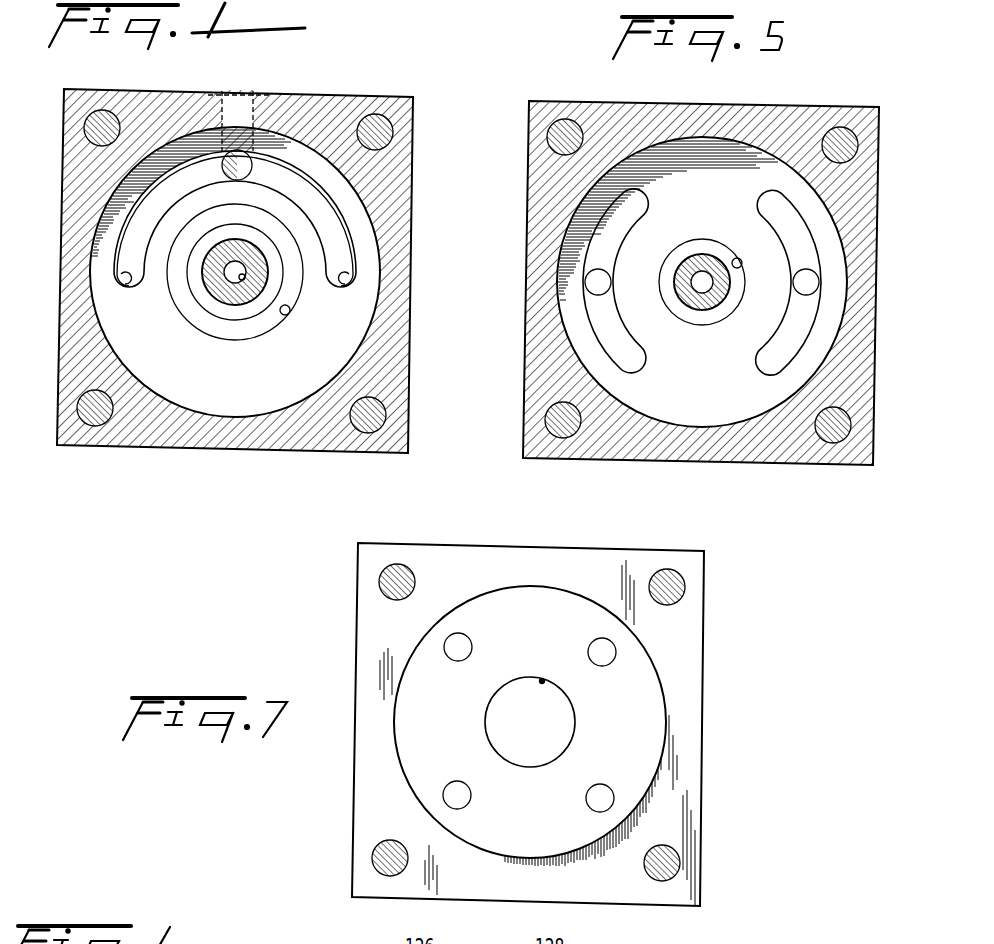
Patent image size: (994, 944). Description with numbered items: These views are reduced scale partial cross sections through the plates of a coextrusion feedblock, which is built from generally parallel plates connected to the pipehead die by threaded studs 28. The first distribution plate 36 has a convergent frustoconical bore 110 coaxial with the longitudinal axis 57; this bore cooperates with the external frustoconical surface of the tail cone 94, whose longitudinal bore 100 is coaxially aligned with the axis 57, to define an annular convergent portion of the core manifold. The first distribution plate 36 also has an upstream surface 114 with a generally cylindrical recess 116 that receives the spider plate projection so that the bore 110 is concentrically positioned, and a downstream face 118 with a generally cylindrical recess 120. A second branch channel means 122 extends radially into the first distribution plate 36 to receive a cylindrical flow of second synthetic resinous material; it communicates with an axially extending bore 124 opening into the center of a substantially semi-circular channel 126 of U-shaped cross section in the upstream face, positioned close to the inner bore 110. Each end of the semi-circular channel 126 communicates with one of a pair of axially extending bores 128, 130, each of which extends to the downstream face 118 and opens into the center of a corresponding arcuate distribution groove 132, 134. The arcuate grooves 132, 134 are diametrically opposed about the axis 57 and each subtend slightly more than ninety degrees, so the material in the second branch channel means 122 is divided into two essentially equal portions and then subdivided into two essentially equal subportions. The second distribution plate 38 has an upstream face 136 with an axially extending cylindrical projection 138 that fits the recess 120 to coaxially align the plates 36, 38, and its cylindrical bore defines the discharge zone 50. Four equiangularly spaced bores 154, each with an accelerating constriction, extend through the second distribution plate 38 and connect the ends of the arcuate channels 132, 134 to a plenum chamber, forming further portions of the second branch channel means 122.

In FIG. 4, the threaded studs 28 is at (84, 129).
In FIG. 5, the threaded studs 28 is at (548, 130).
In FIG. 7, the threaded studs 28 is at (379, 581).
In FIG. 4, the first distribution plate 36 is at (118, 453).
In FIG. 5, the first distribution plate 36 is at (565, 448).
In FIG. 7, the second distribution plate 38 is at (620, 890).
In FIG. 7, the discharge zone 50 is at (542, 682).
In FIG. 4, the longitudinal axis 57 is at (235, 274).
In FIG. 5, the longitudinal axis 57 is at (702, 280).
In FIG. 7, the longitudinal axis 57 is at (530, 723).
In FIG. 4, the tail cone 94 is at (262, 255).
In FIG. 5, the tail cone 94 is at (700, 312).
In FIG. 4, the longitudinal bore 100 is at (245, 280).
In FIG. 4, the convergent frustoconical bore 110 is at (289, 309).
In FIG. 5, the convergent frustoconical bore 110 is at (741, 264).
In FIG. 4, the upstream surface 114 is at (192, 453).
In FIG. 4, the cylindrical recess 116 is at (328, 342).
In FIG. 5, the downstream face 118 is at (780, 463).
In FIG. 5, the cylindrical recess 120 is at (648, 397).
In FIG. 4, the second branch channel means 122 is at (251, 88).
In FIG. 4, the axially extending bore 124 is at (242, 160).
In FIG. 4, the semi-circular channel 126 is at (338, 243).
In FIG. 4, the axially extending bore 128 is at (123, 278).
In FIG. 5, the axially extending bore 128 is at (816, 282).
In FIG. 4, the axially extending bore 130 is at (352, 273).
In FIG. 5, the axially extending bore 130 is at (585, 282).
In FIG. 5, the arcuate distribution groove 132 is at (797, 327).
In FIG. 5, the arcuate distribution groove 134 is at (597, 237).
In FIG. 7, the upstream face 136 is at (696, 771).
In FIG. 7, the cylindrical projection 138 is at (622, 715).
In FIG. 7, the bores 154 is at (448, 646).